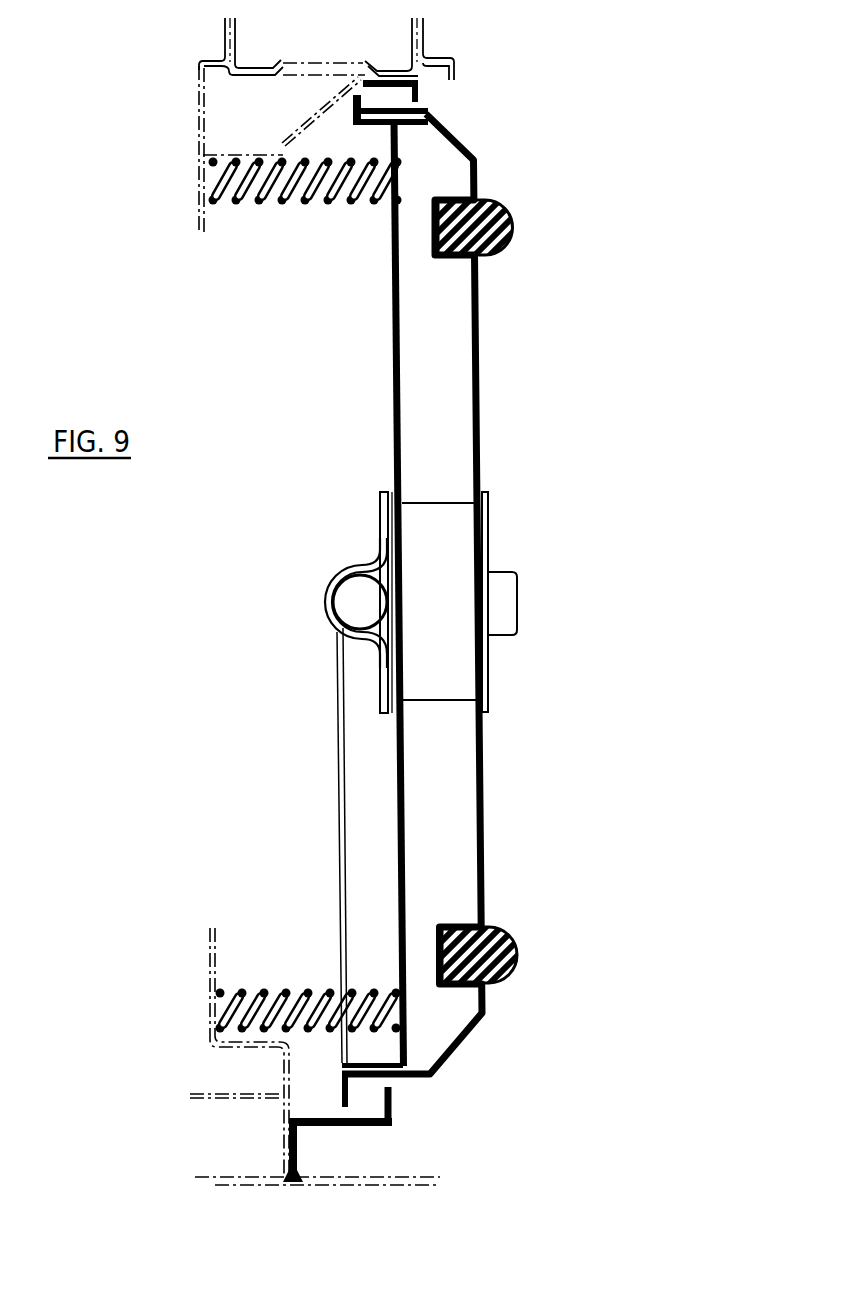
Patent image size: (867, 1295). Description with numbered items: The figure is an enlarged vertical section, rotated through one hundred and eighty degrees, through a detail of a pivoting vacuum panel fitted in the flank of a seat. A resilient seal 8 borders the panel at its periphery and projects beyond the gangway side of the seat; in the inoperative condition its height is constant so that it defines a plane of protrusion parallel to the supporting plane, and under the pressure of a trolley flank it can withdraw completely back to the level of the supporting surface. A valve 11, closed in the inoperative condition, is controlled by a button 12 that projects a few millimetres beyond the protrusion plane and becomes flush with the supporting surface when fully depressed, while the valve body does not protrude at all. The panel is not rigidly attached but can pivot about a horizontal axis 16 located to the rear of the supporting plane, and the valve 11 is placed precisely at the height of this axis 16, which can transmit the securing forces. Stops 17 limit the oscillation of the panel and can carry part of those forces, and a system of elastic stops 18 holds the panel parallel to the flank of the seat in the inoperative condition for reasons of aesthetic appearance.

The resilient seal 8 is at (507, 240).
The valve 11 is at (452, 537).
The button 12 is at (505, 620).
The horizontal axis 16 is at (358, 592).
The stops 17 is at (420, 100).
The elastic stops 18 is at (305, 203).